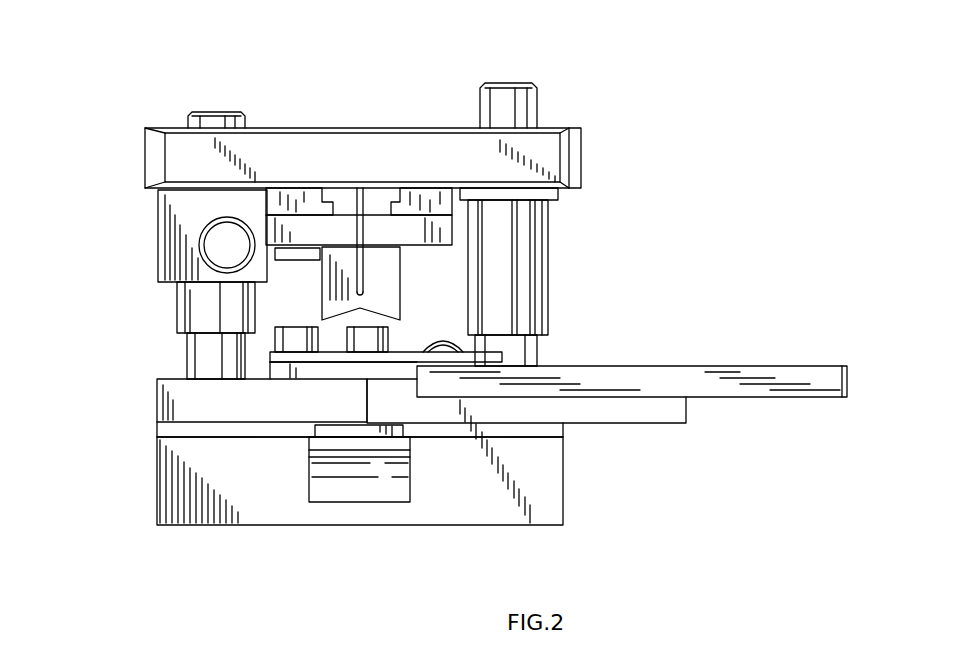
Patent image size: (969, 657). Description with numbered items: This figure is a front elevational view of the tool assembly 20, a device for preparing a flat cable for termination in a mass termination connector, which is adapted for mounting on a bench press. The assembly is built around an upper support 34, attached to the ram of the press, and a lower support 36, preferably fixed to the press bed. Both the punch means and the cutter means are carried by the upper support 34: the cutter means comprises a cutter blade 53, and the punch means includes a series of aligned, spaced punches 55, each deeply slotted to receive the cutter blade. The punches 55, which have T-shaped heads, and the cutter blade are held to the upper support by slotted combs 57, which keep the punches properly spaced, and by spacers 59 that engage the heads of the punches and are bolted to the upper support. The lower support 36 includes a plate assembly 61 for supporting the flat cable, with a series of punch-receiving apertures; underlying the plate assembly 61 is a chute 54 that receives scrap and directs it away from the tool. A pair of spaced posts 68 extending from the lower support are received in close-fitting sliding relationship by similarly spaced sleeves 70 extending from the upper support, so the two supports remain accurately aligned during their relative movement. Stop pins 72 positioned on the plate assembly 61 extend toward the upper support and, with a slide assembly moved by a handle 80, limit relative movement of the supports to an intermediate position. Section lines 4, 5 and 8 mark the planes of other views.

The tool assembly 20 is at (560, 81).
The upper support 34 is at (572, 152).
The lower support 36 is at (563, 487).
The cutter blade 53 is at (366, 280).
The chute 54 is at (377, 482).
The punches 55 is at (392, 295).
The slotted combs 57 is at (290, 223).
The spacers 59 is at (290, 222).
The plate assembly 61 is at (157, 401).
The posts 68 is at (195, 353).
The sleeves 70 is at (195, 305).
The stop pins 72 is at (293, 333).
The handle 80 is at (212, 250).
The section line 4- 4 is at (118, 330).
The section line 5- 5 is at (32, 322).
The section line 8- 8 is at (356, 72).